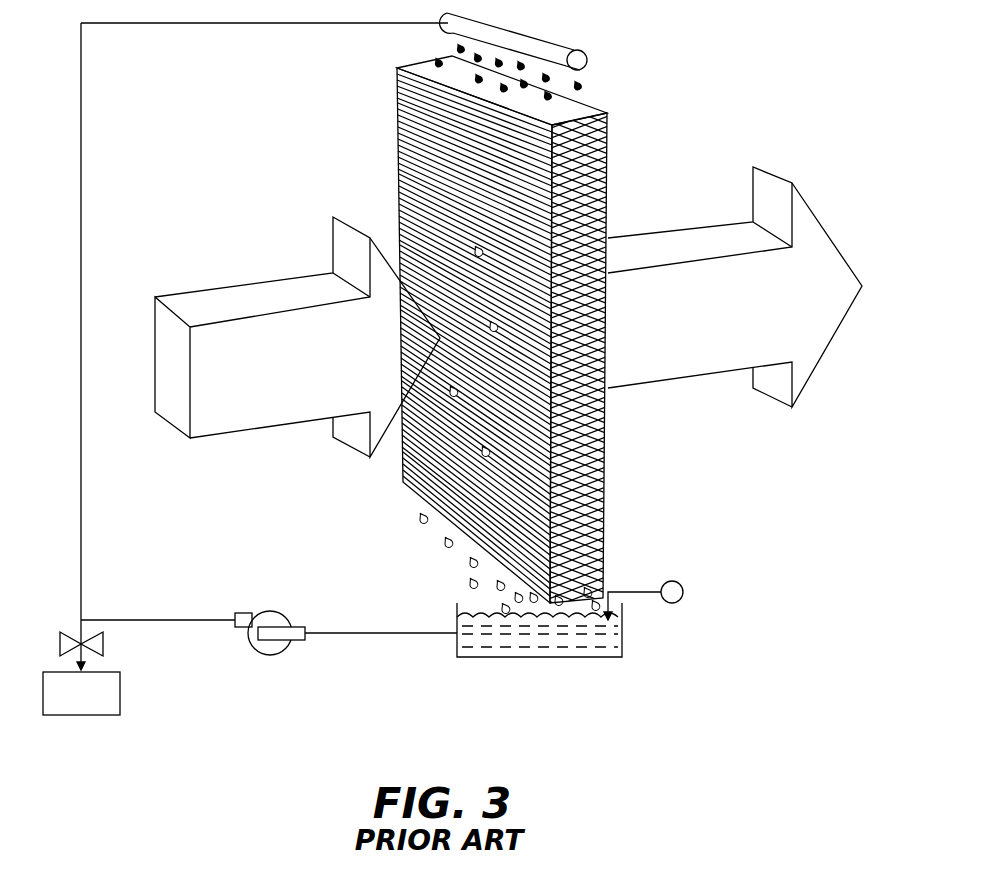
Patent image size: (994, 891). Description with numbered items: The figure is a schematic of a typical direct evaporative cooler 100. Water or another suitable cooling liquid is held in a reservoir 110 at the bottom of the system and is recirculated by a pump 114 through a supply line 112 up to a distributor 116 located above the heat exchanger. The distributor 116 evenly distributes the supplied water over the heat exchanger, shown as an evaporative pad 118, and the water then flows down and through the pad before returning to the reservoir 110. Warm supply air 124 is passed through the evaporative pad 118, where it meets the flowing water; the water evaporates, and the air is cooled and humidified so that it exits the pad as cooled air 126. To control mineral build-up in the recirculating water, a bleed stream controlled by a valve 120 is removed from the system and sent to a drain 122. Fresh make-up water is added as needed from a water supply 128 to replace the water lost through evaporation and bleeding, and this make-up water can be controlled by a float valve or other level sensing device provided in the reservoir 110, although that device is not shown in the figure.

The direct evaporative cooler 100 is at (704, 79).
The reservoir 110 is at (622, 643).
The supply line 112 is at (81, 432).
The pump 114 is at (280, 613).
The distributor 116 is at (527, 35).
The evaporative pad 118 is at (607, 163).
The valve 120 is at (105, 640).
The drain 122 is at (120, 688).
The supply air 124 is at (240, 431).
The cooled air 126 is at (695, 377).
The water supply 128 is at (640, 592).